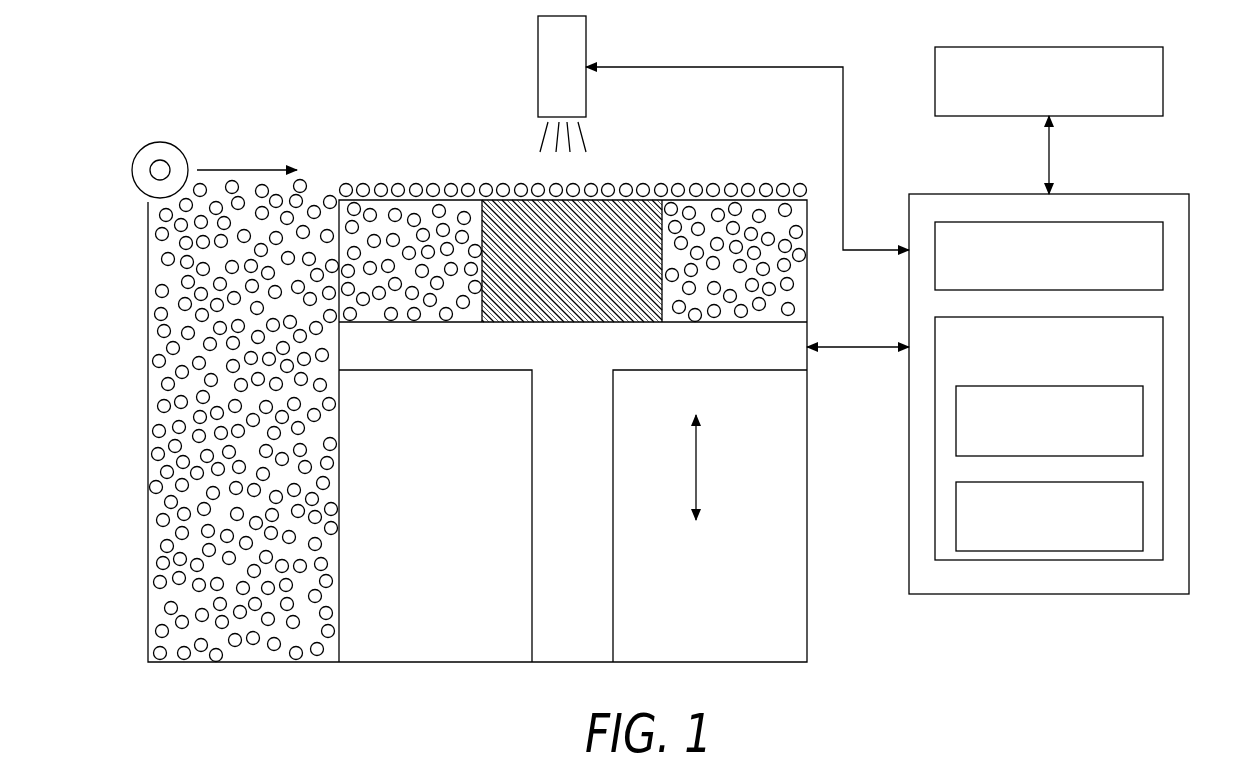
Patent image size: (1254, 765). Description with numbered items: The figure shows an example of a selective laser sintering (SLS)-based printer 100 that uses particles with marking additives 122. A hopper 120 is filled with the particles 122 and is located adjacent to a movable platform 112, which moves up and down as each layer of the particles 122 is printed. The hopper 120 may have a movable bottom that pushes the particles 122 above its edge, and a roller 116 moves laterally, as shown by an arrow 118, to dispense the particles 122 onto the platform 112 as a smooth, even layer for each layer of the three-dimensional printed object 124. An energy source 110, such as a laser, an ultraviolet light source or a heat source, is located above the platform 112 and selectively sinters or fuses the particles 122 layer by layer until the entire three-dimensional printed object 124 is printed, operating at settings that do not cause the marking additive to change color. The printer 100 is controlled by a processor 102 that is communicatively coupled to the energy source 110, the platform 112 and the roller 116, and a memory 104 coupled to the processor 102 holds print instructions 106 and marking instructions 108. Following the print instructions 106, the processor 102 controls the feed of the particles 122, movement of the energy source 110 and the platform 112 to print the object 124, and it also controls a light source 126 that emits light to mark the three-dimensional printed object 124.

The selective laser sintering (SLS)-based printer 100 is at (371, 59).
The processor 102 is at (1163, 260).
The memory 104 is at (1163, 345).
The print instructions 106 is at (1143, 418).
The marking instructions 108 is at (1143, 510).
The energy source 110 is at (538, 60).
The movable platform 112 is at (445, 372).
The roller 116 is at (160, 142).
The arrow 118 is at (252, 168).
The hopper 120 is at (148, 462).
The particles with marking additives 122 is at (312, 200).
The three-dimensional (3D) printed object 124 is at (605, 215).
The light source 126 is at (1163, 85).